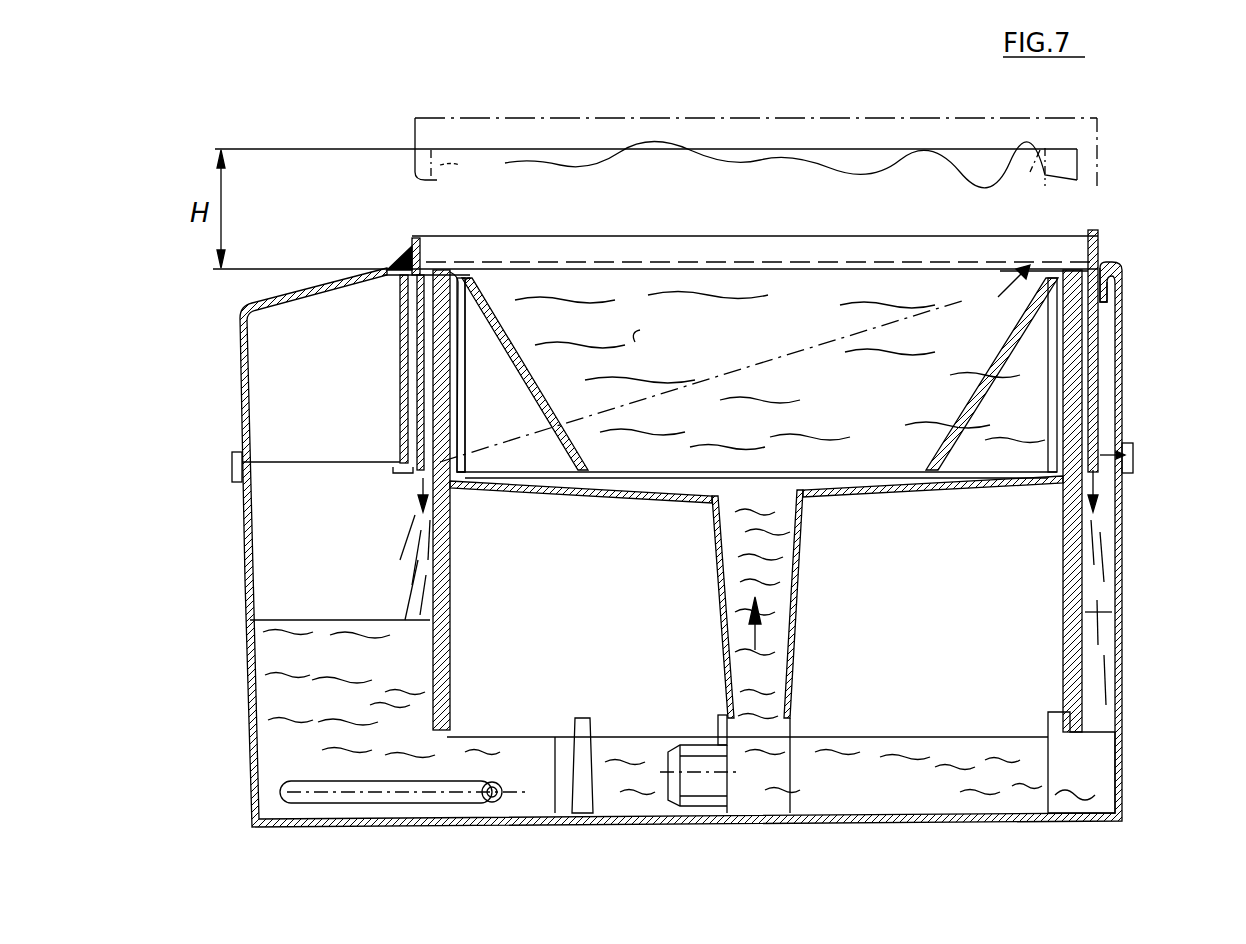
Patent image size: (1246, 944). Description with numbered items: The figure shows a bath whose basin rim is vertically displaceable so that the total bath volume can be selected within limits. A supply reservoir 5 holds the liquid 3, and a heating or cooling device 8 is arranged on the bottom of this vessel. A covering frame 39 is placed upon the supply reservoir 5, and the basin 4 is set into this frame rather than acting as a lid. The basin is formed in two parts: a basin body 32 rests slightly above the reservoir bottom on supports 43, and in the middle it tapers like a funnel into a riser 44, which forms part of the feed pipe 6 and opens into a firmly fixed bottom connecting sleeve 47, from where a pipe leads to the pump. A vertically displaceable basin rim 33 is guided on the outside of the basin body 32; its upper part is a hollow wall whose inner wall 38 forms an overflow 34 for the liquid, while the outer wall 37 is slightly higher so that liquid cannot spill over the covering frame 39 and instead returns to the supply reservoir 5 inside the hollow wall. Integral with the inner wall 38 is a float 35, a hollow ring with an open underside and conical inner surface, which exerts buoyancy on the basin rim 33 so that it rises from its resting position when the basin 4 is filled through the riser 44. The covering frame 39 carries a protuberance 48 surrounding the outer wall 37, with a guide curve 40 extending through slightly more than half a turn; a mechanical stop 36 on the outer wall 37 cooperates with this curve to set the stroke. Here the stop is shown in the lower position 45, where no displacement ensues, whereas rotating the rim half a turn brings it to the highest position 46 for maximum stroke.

The liquid 3 is at (306, 648).
The basin 4 is at (780, 371).
The supply reservoir 5 is at (300, 562).
The feed pipe 6 is at (777, 675).
The heating or cooling device 8 is at (277, 792).
The basin body 32 is at (1040, 482).
The basin rim 33 is at (1078, 386).
The overflow 34 is at (1100, 258).
The float 35 is at (1020, 438).
The mechanical stop 36 is at (393, 478).
The outer wall 37 is at (418, 260).
The inner wall 38 is at (443, 273).
The covering frame 39 is at (240, 372).
The guide curve 40 is at (823, 360).
The supports 43 is at (1082, 768).
The riser 44 is at (730, 673).
The lower position 45 is at (403, 458).
The highest position 46 is at (1118, 308).
The bottom connecting sleeve 47 is at (798, 812).
The protuberance 48 is at (406, 388).